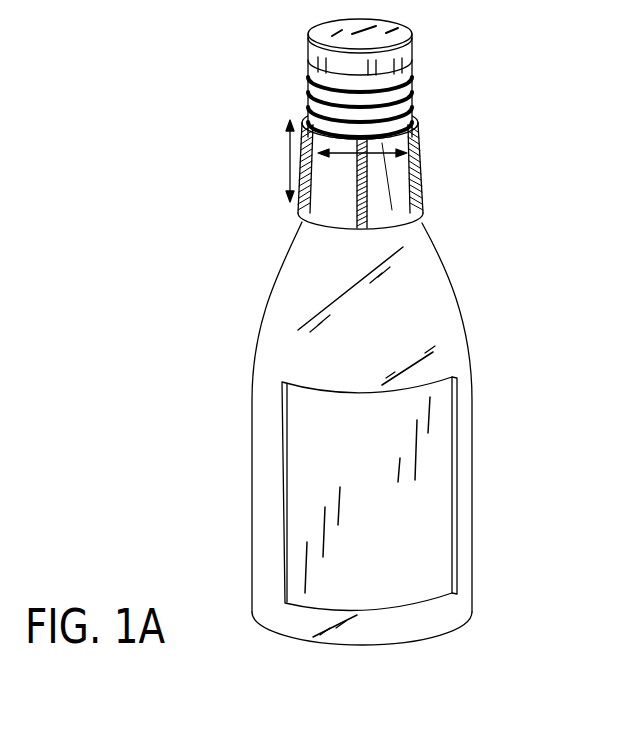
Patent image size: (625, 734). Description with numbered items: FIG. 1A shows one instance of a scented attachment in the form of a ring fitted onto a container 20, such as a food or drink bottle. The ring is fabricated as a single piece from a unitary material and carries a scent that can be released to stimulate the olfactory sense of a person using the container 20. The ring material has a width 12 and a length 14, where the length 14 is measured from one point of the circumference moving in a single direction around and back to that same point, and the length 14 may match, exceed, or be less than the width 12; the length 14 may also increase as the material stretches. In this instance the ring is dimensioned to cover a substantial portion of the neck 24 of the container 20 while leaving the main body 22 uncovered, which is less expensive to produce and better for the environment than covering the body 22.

The width 12 is at (285, 155).
The length 14 is at (310, 107).
The container 20 is at (472, 483).
The main body 22 is at (252, 425).
The neck 24 is at (300, 225).